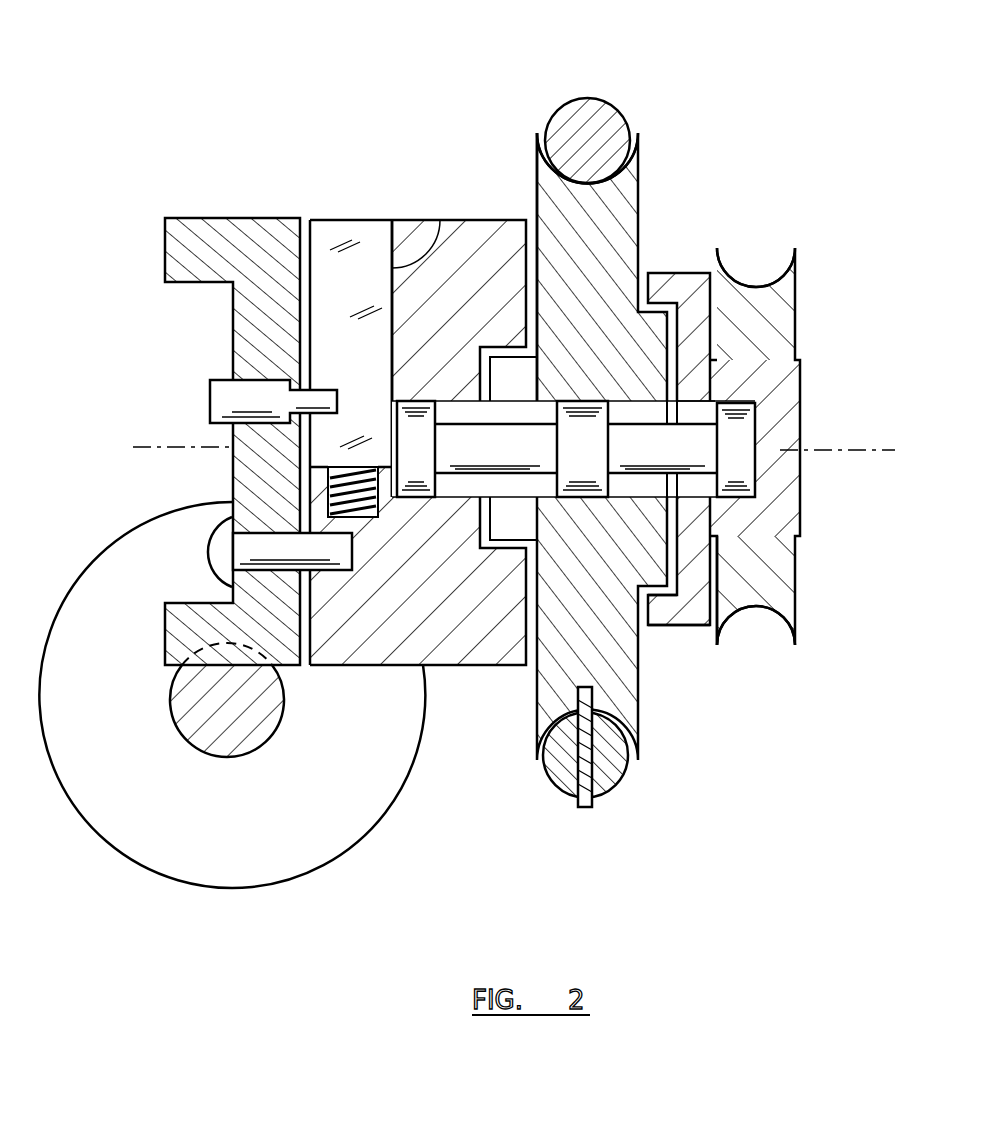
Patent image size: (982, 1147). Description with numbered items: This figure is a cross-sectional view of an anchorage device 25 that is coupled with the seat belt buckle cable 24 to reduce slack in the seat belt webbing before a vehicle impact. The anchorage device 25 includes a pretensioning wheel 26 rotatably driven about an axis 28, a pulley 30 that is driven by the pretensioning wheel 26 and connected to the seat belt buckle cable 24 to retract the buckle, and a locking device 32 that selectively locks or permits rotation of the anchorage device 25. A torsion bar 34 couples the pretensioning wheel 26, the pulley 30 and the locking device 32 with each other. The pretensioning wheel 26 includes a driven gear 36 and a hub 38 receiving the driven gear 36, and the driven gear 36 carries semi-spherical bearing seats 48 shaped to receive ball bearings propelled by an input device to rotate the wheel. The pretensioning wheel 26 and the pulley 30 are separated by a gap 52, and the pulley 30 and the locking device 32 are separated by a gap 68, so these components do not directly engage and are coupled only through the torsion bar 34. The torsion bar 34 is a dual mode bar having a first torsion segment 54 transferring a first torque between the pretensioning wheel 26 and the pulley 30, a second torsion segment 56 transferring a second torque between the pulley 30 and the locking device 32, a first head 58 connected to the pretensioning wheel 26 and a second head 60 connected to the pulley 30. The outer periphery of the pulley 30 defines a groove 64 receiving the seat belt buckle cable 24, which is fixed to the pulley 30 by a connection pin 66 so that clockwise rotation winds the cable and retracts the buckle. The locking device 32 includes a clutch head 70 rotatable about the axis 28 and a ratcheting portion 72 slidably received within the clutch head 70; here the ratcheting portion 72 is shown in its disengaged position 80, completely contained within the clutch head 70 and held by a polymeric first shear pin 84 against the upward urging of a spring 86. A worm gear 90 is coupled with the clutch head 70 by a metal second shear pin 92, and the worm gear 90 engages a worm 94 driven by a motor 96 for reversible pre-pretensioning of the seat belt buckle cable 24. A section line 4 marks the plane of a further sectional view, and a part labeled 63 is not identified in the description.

The section line 4- 4 is at (342, 195).
The seat belt buckle cable 24 is at (588, 98).
The anchorage device 25 is at (750, 114).
The pretensioning wheel 26 is at (767, 435).
The axis 28 is at (853, 452).
The pulley 30 is at (591, 440).
The locking device 32 is at (322, 190).
The torsion bar 34 is at (800, 528).
The driven gear 36 is at (800, 300).
The hub 38 is at (680, 622).
The bearing seats 48 is at (760, 262).
The gap 52 is at (652, 268).
The first torsion segment 54 is at (700, 418).
The second torsion segment 56 is at (510, 478).
The first head 58 is at (747, 392).
The second head 60 is at (728, 617).
The lower body 63 is at (440, 480).
The groove 64 is at (603, 128).
The connection pin 66 is at (590, 808).
The gap 68 is at (528, 214).
The clutch head 70 is at (418, 312).
The ratcheting portion 72 is at (424, 236).
The disengaged position 80 is at (304, 210).
The first shear pin 84 is at (255, 378).
The spring 86 is at (326, 478).
The worm gear 90 is at (200, 218).
The second shear pin 92 is at (236, 530).
The worm 94 is at (216, 760).
The motor 96 is at (165, 895).